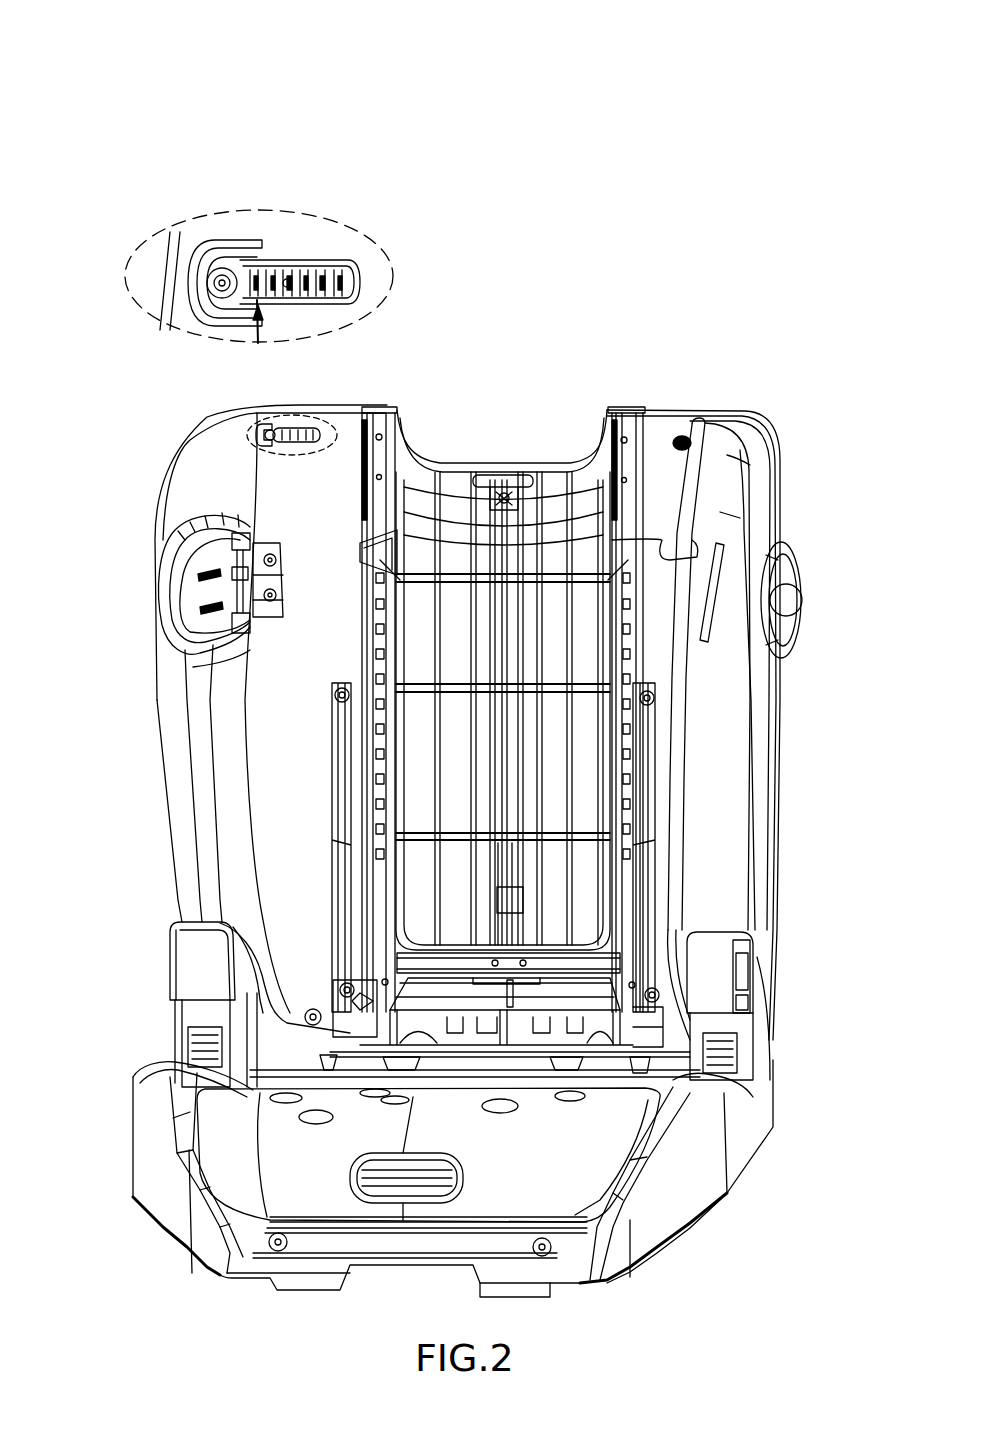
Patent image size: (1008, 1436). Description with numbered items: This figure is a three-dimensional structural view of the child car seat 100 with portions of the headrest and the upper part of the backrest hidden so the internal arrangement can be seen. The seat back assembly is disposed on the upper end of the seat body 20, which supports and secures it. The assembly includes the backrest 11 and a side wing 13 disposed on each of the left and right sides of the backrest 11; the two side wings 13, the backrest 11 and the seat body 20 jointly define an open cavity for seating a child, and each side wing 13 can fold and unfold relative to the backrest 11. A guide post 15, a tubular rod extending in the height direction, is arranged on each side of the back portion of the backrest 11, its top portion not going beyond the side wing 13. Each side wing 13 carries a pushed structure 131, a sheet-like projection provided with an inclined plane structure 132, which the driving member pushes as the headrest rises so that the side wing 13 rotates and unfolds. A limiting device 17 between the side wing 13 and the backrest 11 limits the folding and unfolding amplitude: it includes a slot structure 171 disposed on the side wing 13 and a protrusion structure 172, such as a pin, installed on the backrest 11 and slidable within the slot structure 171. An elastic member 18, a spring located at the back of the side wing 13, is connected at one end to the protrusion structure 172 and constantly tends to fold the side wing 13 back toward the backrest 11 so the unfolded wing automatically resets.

The child car seat 100 is at (126, 36).
The backrest 11 is at (595, 877).
The side wing 13 is at (207, 802).
The pushed structure 131 is at (380, 545).
The inclined plane structure 132 is at (360, 555).
The guide post 15 is at (380, 638).
The limiting device 17 is at (298, 140).
The slot structure 171 is at (271, 270).
The protrusion structure 172 is at (207, 263).
The elastic member 18 is at (333, 268).
The seat body 20 is at (695, 1162).